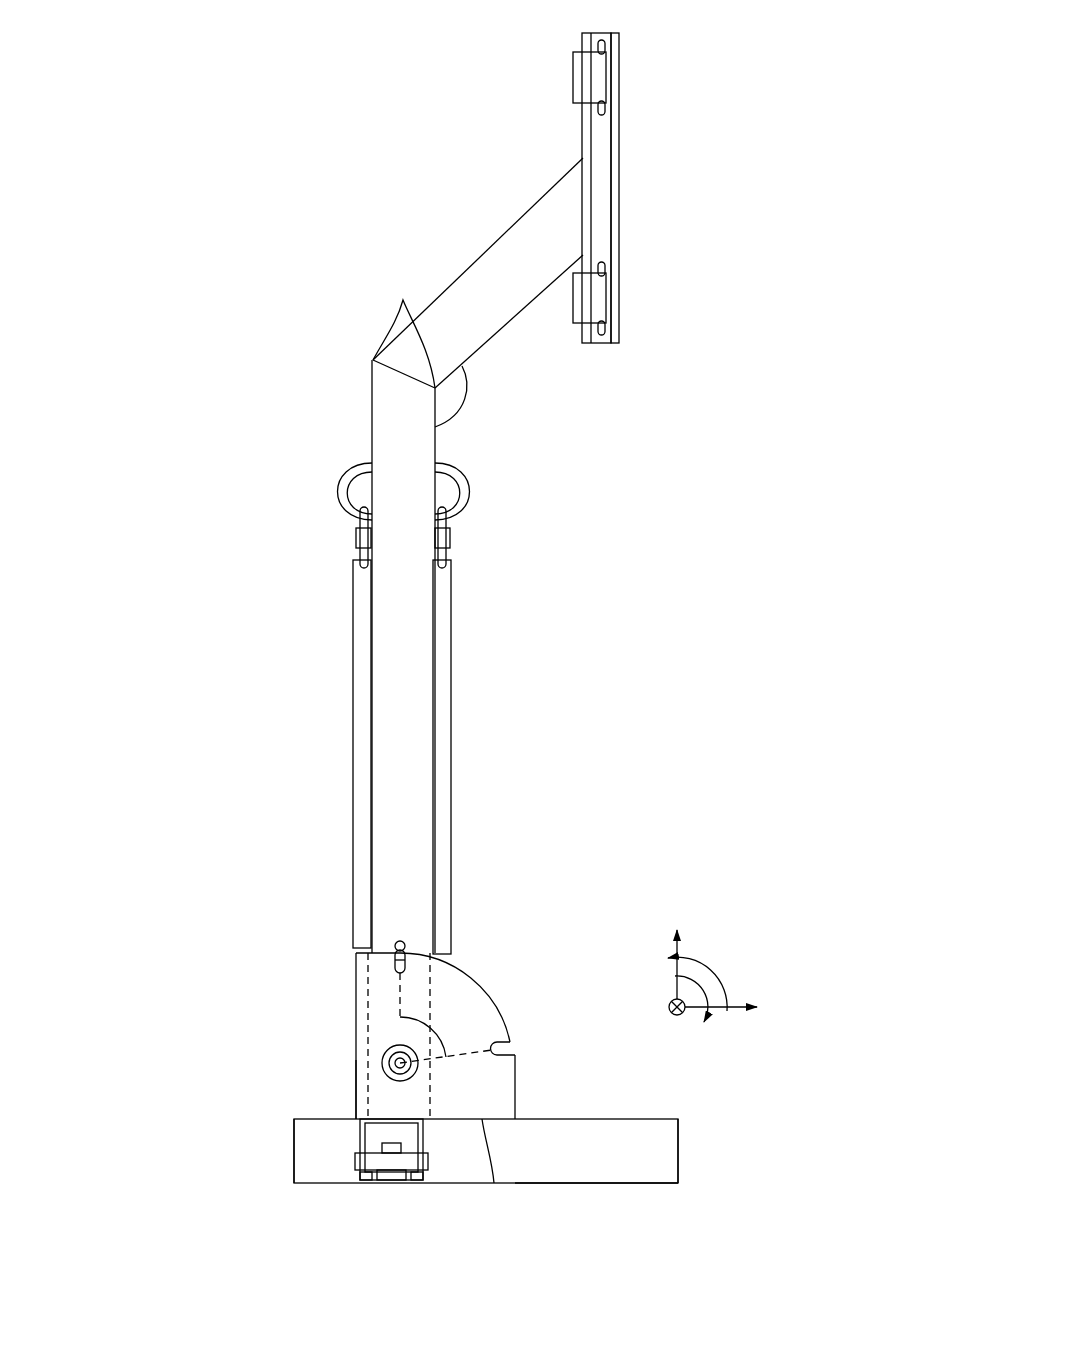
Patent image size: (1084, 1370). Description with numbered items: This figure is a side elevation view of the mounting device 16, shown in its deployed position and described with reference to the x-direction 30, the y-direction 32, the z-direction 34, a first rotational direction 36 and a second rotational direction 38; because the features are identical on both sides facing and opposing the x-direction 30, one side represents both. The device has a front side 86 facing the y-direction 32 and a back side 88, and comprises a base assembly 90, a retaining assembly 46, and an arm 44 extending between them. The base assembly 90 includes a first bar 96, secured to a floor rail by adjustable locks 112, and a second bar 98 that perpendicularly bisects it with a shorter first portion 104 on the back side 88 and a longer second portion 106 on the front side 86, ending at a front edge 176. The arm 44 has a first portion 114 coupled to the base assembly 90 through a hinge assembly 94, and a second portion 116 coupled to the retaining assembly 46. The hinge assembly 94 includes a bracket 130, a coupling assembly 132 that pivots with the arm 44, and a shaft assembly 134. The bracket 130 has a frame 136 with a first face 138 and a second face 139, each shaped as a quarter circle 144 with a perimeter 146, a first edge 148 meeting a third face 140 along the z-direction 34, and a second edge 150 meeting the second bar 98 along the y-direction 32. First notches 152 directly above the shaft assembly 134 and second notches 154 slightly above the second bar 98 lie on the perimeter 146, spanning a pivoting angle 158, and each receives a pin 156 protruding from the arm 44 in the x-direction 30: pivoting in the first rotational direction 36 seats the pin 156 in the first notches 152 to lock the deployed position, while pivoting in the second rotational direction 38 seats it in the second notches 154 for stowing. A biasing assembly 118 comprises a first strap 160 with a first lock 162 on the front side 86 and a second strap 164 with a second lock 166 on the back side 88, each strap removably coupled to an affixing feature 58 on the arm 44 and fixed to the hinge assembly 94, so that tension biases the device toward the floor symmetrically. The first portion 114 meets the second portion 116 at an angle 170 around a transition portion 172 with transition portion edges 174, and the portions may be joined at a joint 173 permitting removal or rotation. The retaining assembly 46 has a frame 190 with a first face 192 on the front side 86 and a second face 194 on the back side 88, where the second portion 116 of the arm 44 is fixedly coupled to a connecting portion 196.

The mounting device 16 is at (309, 107).
The longitudinal axis or x-direction 30 is at (671, 1013).
The lateral axis or y-direction 32 is at (735, 1005).
The vertical axis or z-direction 34 is at (680, 953).
The first rotational direction 36 is at (713, 975).
The second rotational direction 38 is at (675, 977).
The arm 44 is at (490, 627).
The retaining assembly 46 is at (708, 95).
The affixing features 58 is at (340, 488).
The first or front side 86 is at (596, 458).
The second or back side 88 is at (243, 395).
The base assembly 90 is at (705, 1142).
The hinge assembly 94 is at (578, 940).
The first bar 96 is at (412, 1142).
The second bar 98 is at (662, 1133).
The first portion 104 is at (310, 1150).
The second portion 106 is at (598, 1167).
The adjustable locks 112 is at (368, 1187).
The first portion 114 is at (390, 752).
The second portion 116 is at (512, 247).
The biasing assembly 118 is at (340, 598).
The bracket 130 is at (493, 968).
The coupling assembly 132 is at (356, 1032).
The shaft assembly 134 is at (380, 1063).
The frame 136 is at (528, 1088).
The first face 138 is at (487, 1013).
The second face 139 is at (455, 997).
The third face 140 is at (356, 1085).
The quarter circle 144 is at (480, 953).
The perimeter 146 is at (493, 993).
The first edge 148 is at (356, 970).
The second edge 150 is at (494, 1183).
The first notches 152 is at (405, 967).
The second notches 154 is at (514, 1047).
The pin 156 is at (399, 942).
The pivoting angle 158 is at (400, 1017).
The first strap 160 is at (452, 757).
The first lock 162 is at (450, 540).
The second strap 164 is at (354, 660).
The second lock 166 is at (357, 540).
The angle 170 is at (464, 396).
The transition portion 172 is at (365, 345).
The joint 173 is at (358, 372).
The transition portion edges 174 is at (404, 328).
The front edge 176 is at (678, 1150).
The frame 190 is at (591, 33).
The first face 192 is at (620, 185).
The second face 194 is at (584, 113).
The connecting portion 196 is at (582, 185).